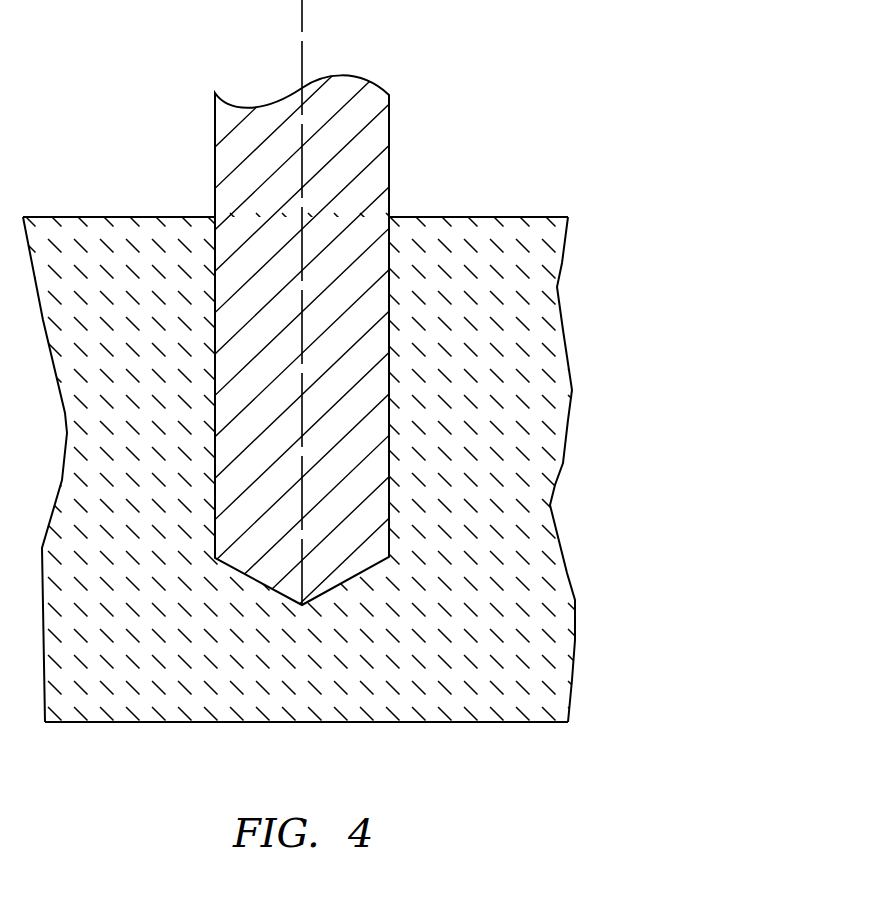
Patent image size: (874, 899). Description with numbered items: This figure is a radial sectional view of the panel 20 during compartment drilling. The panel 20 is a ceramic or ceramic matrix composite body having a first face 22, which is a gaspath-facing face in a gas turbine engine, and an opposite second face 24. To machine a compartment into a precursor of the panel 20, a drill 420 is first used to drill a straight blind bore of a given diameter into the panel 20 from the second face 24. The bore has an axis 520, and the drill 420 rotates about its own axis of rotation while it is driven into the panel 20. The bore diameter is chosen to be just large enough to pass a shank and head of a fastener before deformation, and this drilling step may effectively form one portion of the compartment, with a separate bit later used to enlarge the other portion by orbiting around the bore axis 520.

The panel 20 is at (523, 463).
The first face 22 is at (545, 722).
The second face 24 is at (513, 217).
The drill 420 is at (370, 135).
The axis 520 is at (405, 302).